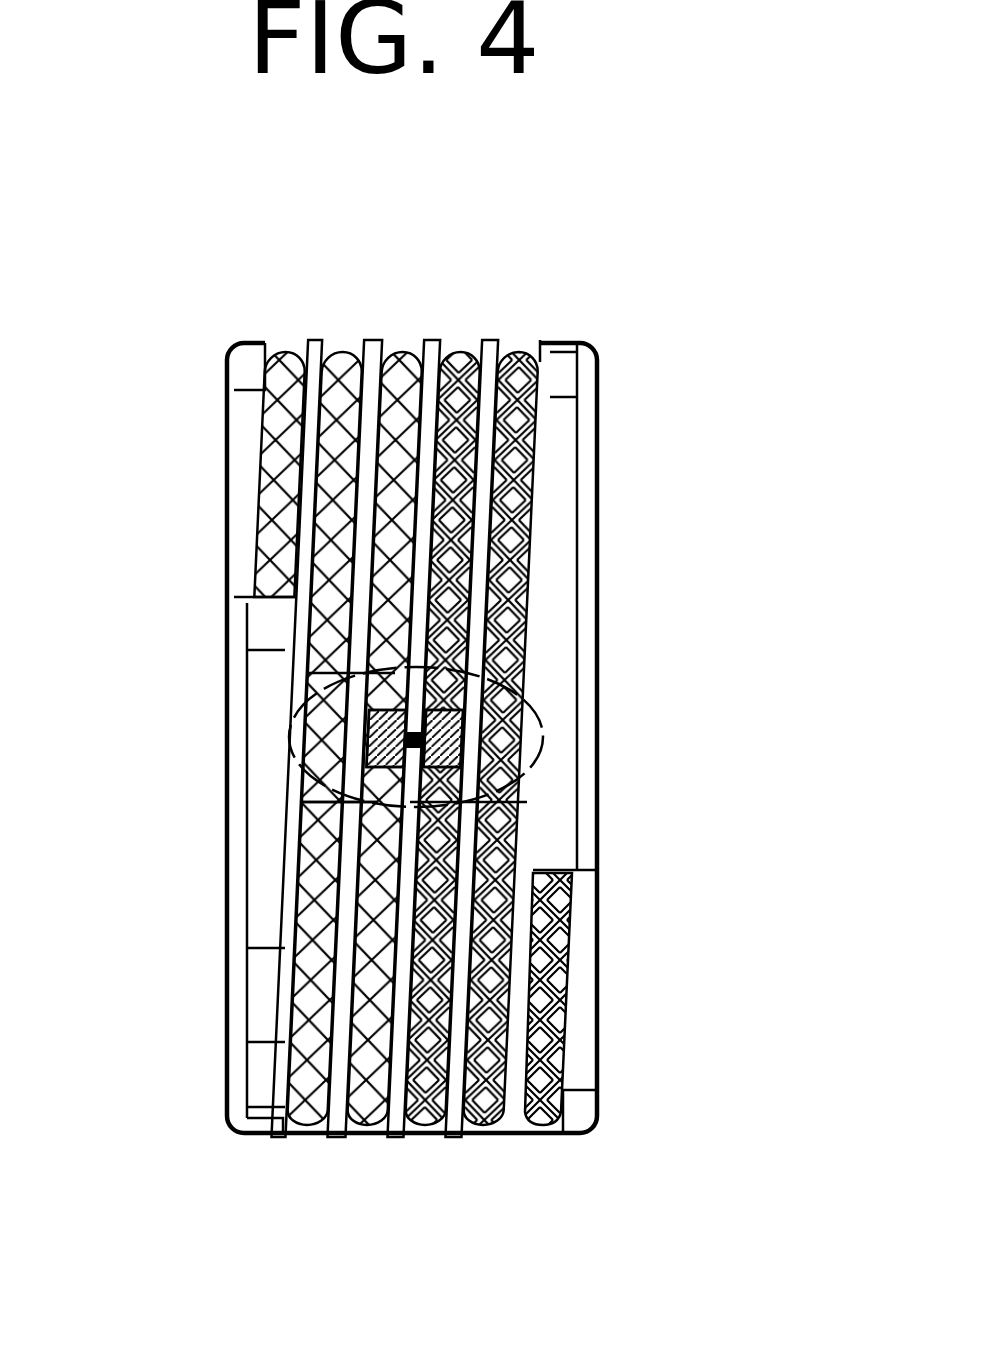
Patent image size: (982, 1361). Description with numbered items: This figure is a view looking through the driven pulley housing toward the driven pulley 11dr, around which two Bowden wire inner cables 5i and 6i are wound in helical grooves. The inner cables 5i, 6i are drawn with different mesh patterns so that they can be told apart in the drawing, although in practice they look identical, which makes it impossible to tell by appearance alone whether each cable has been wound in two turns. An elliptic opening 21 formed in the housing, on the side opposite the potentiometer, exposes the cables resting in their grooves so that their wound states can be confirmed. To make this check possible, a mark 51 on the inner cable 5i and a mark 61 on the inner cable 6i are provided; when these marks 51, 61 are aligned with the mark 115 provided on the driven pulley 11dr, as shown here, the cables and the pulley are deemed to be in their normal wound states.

The driven pulley 11dr is at (614, 523).
The inner cable 6i is at (344, 350).
The inner cable 5i is at (484, 1127).
The mark 61 is at (370, 728).
The mark 51 is at (426, 742).
The elliptic opening 21 is at (543, 693).
The mark 115 is at (368, 832).